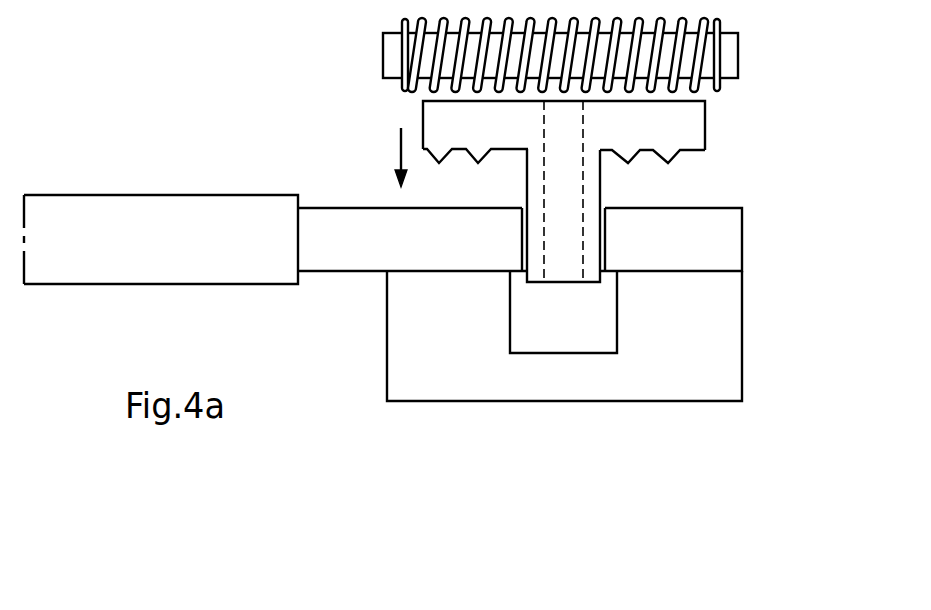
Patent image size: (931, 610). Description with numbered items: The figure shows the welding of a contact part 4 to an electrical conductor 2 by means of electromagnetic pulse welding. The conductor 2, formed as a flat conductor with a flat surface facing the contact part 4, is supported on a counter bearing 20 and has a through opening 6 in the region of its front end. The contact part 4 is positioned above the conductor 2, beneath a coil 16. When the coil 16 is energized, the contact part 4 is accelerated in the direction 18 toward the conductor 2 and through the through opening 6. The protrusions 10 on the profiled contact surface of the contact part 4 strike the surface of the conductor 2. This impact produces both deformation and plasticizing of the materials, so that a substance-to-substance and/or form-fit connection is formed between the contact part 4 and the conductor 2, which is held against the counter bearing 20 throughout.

The electrical conductor 2 is at (729, 240).
The contact part 4 is at (693, 131).
The through opening 6 is at (605, 233).
The protrusions 10 is at (670, 153).
The coil 16 is at (393, 55).
The direction 18 is at (390, 157).
The counter bearing 20 is at (729, 336).